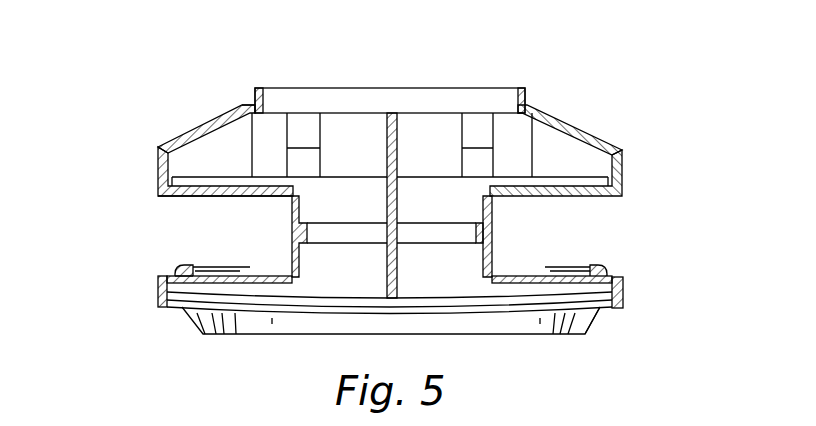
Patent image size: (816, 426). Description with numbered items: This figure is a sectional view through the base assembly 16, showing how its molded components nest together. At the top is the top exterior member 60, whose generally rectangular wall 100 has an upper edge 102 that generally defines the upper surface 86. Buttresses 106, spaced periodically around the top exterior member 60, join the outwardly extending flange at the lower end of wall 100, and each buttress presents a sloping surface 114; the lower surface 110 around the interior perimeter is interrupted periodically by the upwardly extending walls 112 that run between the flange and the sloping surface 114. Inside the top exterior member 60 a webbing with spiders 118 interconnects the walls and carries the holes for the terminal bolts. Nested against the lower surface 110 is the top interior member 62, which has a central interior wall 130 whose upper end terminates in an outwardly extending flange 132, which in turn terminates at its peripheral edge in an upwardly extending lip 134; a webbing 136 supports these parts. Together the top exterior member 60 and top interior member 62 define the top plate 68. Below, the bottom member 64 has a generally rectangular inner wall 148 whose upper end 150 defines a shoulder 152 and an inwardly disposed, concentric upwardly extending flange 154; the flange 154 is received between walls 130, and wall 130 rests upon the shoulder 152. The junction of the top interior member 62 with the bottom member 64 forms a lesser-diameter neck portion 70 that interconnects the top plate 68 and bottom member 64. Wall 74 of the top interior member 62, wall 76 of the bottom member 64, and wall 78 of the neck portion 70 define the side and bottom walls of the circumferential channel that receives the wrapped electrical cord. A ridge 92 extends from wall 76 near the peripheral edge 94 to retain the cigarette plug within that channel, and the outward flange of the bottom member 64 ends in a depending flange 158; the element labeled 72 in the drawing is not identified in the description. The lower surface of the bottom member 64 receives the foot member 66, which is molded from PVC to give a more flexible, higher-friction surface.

The base assembly 16 is at (394, 135).
The top exterior member 60 is at (593, 107).
The top interior member 62 is at (606, 179).
The bottom member 64 is at (630, 296).
The foot member 66 is at (492, 326).
The top plate 68 is at (632, 188).
The neck portion 70 is at (405, 236).
The flange plate 72 is at (403, 306).
The wall of top interior member 74 is at (186, 197).
The wall of bottom member 76 is at (163, 275).
The wall of neck portion 78 is at (292, 223).
The upper surface 86 is at (519, 88).
The ridge 92 is at (572, 268).
The peripheral edge 94 is at (158, 284).
The wall 100 is at (254, 104).
The upper edge 102 is at (263, 93).
The buttress 106 is at (176, 140).
The lower surface 110 is at (216, 176).
The upwardly extending wall 112 is at (494, 148).
The sloping surface 114 is at (551, 110).
The spider 118 is at (398, 146).
The central interior wall 130 is at (300, 213).
The outwardly extending flange 132 is at (225, 198).
The upwardly extending lip 134 is at (160, 178).
The webbing 136 is at (398, 221).
The inner wall 148 is at (300, 257).
The upper end 150 is at (474, 222).
The shoulder 152 is at (490, 231).
The upwardly extending flange 154 is at (418, 232).
The depending flange 158 is at (618, 310).